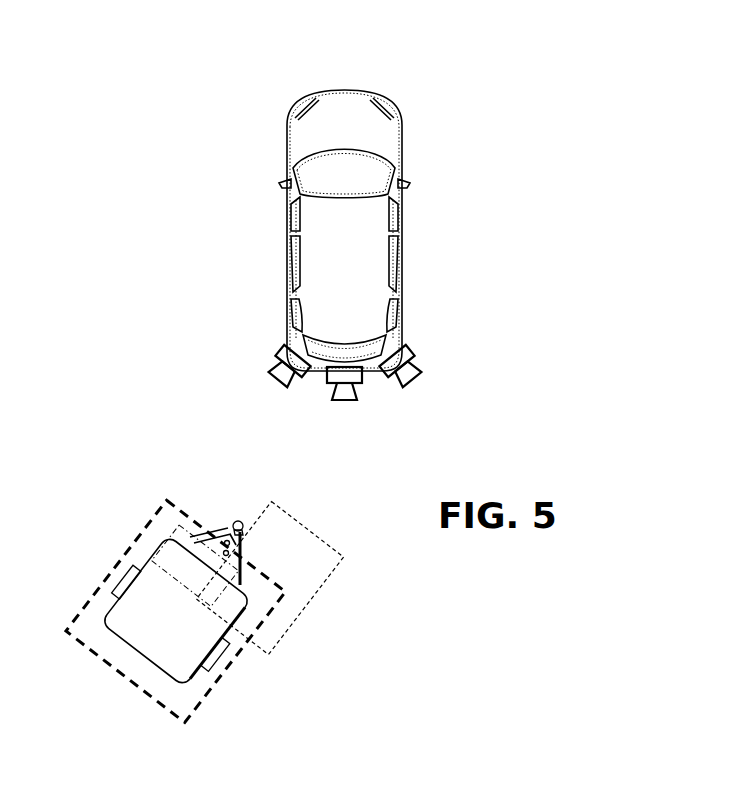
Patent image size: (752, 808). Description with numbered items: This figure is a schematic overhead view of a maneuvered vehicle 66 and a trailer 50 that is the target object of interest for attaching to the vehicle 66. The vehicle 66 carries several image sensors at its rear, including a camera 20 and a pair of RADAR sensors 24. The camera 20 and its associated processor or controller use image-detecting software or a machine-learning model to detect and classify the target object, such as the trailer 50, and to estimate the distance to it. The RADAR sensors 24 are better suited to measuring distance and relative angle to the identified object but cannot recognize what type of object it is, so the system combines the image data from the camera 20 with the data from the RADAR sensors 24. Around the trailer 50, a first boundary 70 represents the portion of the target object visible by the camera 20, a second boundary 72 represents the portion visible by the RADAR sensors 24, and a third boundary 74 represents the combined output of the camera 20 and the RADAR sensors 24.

The vehicle 66 is at (403, 212).
The RADAR sensors 24 is at (280, 347).
The camera 20 is at (343, 401).
The trailer 50 is at (107, 605).
The second boundary 72 is at (193, 517).
The third boundary 74 is at (145, 522).
The first boundary 70 is at (313, 595).